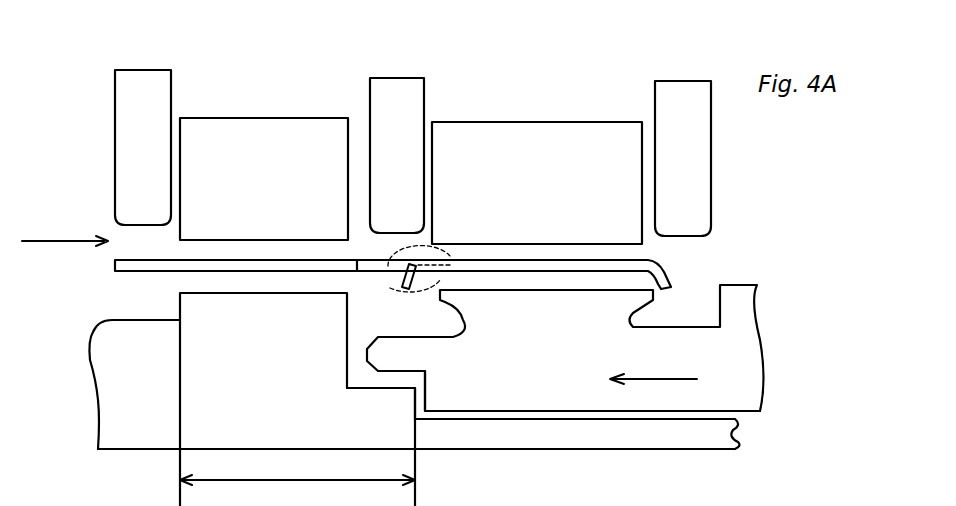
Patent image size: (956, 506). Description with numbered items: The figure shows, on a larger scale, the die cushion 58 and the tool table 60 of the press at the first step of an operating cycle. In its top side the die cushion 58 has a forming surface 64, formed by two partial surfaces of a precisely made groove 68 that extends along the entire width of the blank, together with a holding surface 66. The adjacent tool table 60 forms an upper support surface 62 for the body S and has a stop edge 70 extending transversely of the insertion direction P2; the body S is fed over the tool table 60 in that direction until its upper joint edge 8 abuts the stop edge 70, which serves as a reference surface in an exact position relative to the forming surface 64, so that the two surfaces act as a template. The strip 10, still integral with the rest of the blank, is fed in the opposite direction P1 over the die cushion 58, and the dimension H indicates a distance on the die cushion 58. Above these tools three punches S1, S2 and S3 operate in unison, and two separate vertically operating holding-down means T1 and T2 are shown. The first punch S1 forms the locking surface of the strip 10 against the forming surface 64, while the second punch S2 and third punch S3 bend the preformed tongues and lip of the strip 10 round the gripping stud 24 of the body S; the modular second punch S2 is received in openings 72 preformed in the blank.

The upper joint edge 8 is at (417, 408).
The strip 10 is at (318, 270).
The gripping stud 24 is at (583, 303).
The die cushion 58 is at (120, 396).
The tool table 60 is at (545, 436).
The upper support surface 62 is at (680, 415).
The forming surface 64 is at (180, 310).
The holding surface 66 is at (247, 292).
The groove 68 is at (143, 313).
The stop edge 70 is at (417, 394).
The openings 72 is at (393, 270).
The body S is at (740, 317).
The first punch S1 is at (128, 88).
The second punch S2 is at (385, 93).
The third punch S3 is at (690, 97).
The holding-down means T1 is at (245, 116).
The holding-down means T2 is at (515, 120).
The feed direction P1 is at (65, 231).
The insertion direction P2 is at (653, 367).
The height dimension H is at (297, 470).